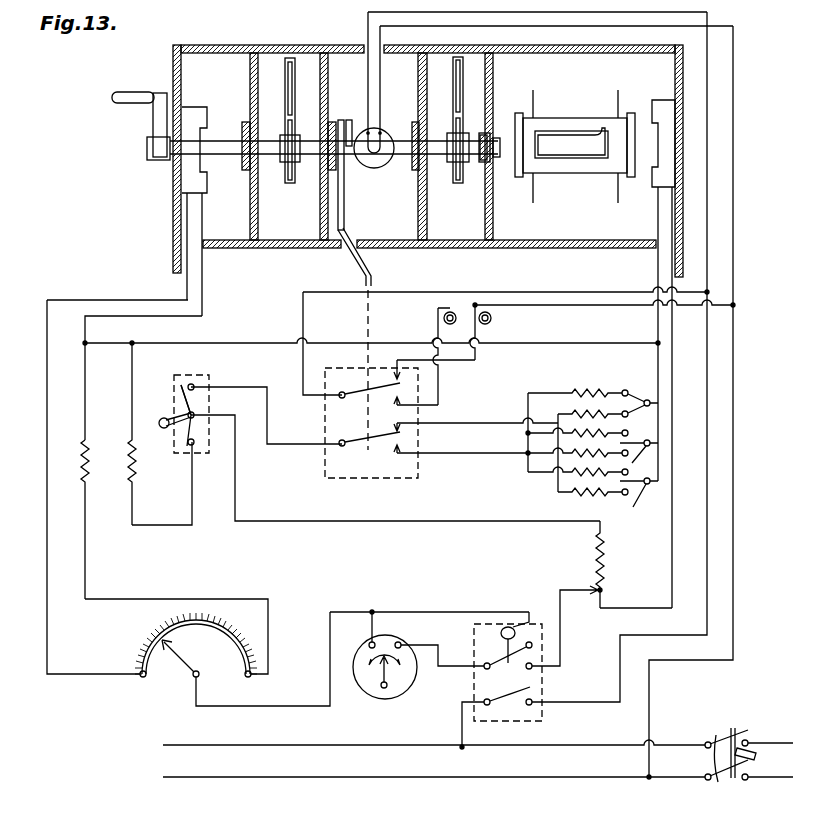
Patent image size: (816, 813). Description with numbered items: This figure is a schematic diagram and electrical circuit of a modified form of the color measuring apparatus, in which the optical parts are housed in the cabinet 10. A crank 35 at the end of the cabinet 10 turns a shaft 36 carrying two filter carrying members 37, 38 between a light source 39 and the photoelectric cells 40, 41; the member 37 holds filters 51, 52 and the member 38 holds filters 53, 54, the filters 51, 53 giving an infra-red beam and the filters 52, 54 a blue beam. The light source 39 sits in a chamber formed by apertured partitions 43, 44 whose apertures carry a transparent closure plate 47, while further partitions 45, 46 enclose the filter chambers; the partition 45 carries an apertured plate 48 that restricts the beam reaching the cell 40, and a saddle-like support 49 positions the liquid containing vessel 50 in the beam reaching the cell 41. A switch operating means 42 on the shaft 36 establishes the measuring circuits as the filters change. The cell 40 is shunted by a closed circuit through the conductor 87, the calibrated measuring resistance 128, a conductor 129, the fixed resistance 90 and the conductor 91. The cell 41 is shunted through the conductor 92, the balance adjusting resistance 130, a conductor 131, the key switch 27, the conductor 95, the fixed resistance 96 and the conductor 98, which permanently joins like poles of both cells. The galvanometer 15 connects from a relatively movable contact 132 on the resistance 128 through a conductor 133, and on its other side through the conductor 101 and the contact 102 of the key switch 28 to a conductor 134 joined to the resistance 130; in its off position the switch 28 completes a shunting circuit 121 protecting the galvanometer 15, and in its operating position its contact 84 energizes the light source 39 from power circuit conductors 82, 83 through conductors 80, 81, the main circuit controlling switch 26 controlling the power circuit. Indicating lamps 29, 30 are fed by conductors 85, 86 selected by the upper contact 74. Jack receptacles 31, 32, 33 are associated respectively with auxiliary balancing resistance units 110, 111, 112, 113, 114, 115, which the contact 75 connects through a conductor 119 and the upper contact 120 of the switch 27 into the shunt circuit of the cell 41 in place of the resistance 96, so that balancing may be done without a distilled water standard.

The cabinet 10 is at (173, 201).
The galvanometer 15 is at (399, 683).
The main circuit controlling switch 26 is at (722, 740).
The key switch 27 is at (174, 414).
The key switch 28 is at (506, 626).
The indicating lamp 29 is at (445, 305).
The indicating lamp 30 is at (492, 319).
The jack receptacle 31 is at (660, 403).
The jack receptacle 32 is at (650, 458).
The jack receptacle 33 is at (638, 503).
The crank 35 is at (152, 119).
The shaft 36 is at (222, 147).
The filter carrying member 37 is at (290, 184).
The filter carrying member 38 is at (458, 184).
The light source 39 is at (381, 130).
The photoelectric cell 40 is at (195, 110).
The photoelectric cell 41 is at (663, 105).
The switch operating means 42 is at (373, 272).
The apertured partition 43 is at (328, 84).
The apertured partition 44 is at (420, 195).
The apertured partition 45 is at (252, 208).
The apertured partition 46 is at (493, 90).
The transparent closure plate 47 is at (345, 167).
The apertured plate 48 is at (245, 167).
The saddle-like support 49 is at (560, 112).
The liquid containing vessel 50 is at (613, 163).
The filter 51 is at (287, 170).
The filter 52 is at (287, 78).
The filter 53 is at (457, 170).
The filter 54 is at (457, 110).
The upper contact 74 is at (388, 392).
The contact 75 is at (380, 442).
The conductor 80 is at (735, 486).
The conductor 81 is at (710, 541).
The power circuit conductor 82 is at (762, 743).
The power circuit conductor 83 is at (770, 778).
The circuit controlling contact 84 is at (512, 697).
The conductor 85 is at (514, 293).
The conductor 86 is at (570, 306).
The conductor 87 is at (47, 524).
The fixed resistance 90 is at (93, 447).
The conductor 91 is at (203, 303).
The conductor 92 is at (673, 345).
The conductor 95 is at (170, 528).
The fixed resistance 96 is at (140, 468).
The conductor 98 is at (220, 344).
The conductor 101 is at (452, 663).
The movable contact 102 is at (518, 668).
The resistance unit 110 is at (594, 390).
The resistance unit 111 is at (578, 412).
The resistance unit 112 is at (612, 433).
The resistance unit 113 is at (572, 452).
The resistance unit 114 is at (578, 478).
The resistance unit 115 is at (584, 497).
The conductor 119 is at (268, 418).
The upper contact 120 is at (200, 404).
The shunting circuit 121 is at (425, 612).
The calibrated measuring resistance 128 is at (240, 641).
The conductor 129 is at (160, 599).
The balance adjusting resistance 130 is at (604, 566).
The conductor 131 is at (380, 521).
The relatively movable contact 132 is at (178, 660).
The conductor 133 is at (302, 706).
The conductor 134 is at (561, 633).